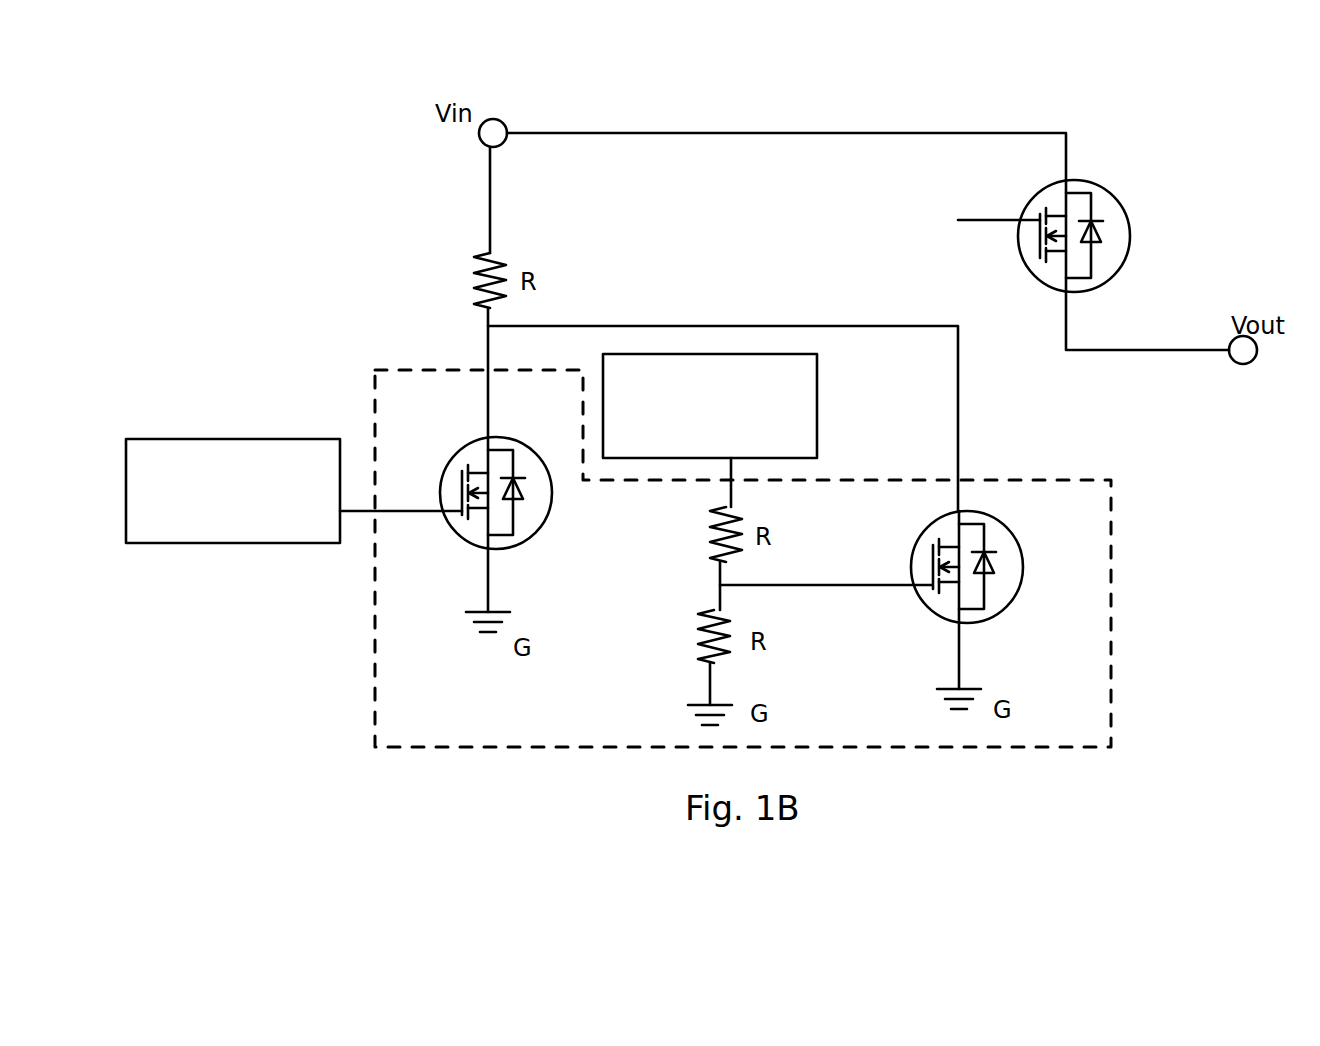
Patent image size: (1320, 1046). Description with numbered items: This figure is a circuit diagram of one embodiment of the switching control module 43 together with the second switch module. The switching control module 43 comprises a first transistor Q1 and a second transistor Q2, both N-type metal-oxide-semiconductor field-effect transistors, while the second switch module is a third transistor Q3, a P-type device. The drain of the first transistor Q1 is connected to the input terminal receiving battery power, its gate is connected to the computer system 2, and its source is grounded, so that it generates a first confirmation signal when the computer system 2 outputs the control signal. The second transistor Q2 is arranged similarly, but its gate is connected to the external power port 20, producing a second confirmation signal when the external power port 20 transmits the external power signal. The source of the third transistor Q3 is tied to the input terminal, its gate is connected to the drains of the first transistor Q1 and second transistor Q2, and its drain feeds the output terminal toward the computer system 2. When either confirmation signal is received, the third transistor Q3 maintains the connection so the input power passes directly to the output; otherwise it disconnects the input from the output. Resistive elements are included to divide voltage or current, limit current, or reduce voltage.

The computer system 2 is at (233, 491).
The external power port 20 is at (710, 406).
The switching control module 43 is at (1116, 495).
The first transistor Q1 is at (541, 531).
The second transistor Q2 is at (1013, 599).
The third transistor Q3 is at (1118, 204).